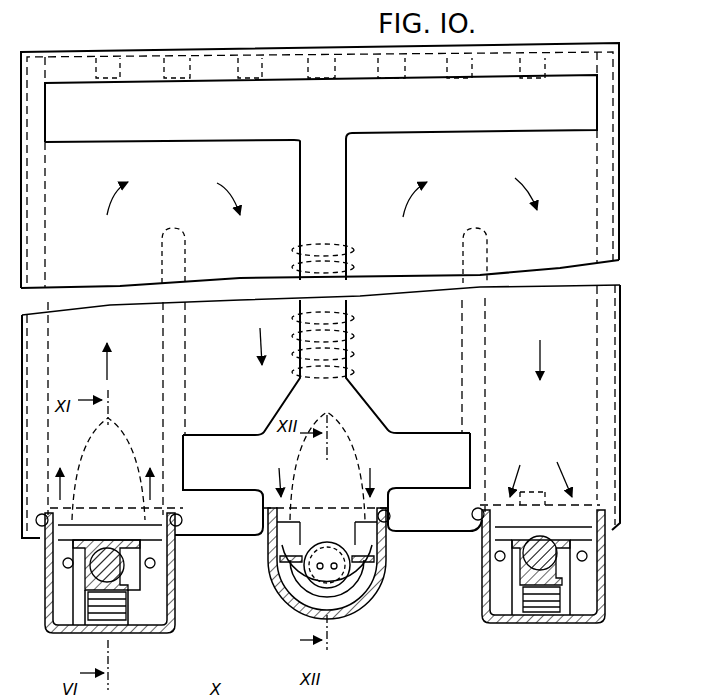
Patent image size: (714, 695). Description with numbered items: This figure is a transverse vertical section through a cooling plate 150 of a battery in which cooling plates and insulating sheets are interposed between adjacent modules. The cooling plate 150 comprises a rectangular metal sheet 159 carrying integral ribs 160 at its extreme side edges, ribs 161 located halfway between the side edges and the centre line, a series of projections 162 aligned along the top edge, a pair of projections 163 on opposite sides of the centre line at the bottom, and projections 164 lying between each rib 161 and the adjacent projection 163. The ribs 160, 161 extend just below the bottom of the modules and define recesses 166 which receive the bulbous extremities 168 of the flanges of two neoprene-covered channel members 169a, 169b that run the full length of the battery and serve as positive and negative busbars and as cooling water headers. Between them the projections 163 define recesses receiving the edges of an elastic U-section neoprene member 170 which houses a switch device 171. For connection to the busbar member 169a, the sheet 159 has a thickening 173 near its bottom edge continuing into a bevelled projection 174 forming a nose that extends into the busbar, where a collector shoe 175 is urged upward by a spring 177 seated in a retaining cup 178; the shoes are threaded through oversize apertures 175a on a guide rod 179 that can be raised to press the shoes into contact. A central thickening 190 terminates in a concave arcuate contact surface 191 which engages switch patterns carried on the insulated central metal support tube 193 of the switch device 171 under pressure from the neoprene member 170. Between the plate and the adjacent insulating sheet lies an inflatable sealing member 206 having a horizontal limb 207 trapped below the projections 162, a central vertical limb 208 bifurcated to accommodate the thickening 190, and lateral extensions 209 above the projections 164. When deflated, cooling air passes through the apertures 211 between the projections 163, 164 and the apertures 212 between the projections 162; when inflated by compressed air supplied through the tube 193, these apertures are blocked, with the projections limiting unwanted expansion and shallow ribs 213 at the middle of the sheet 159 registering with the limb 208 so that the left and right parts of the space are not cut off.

The cooling plate 150 is at (37, 97).
The rectangular metal sheet 159 is at (155, 152).
The ribs 160 is at (42, 367).
The ribs 161 is at (178, 366).
The projections 162 is at (110, 64).
The projections 163 is at (355, 513).
The projections 164 is at (219, 510).
The recesses 166 is at (60, 513).
The bulbous extremities 168 is at (50, 524).
The positive busbar member 169a is at (170, 630).
The negative busbar member 169b is at (490, 622).
The elastic neoprene member 170 is at (333, 618).
The switch device 171 is at (340, 593).
The thickening 173 is at (112, 426).
The bevelled projection 174 is at (133, 530).
The collector shoe 175 is at (120, 570).
The longitudinal aperture 175a is at (140, 597).
The spring 177 is at (100, 620).
The retaining cup 178 is at (148, 613).
The guide rod 179 is at (84, 580).
The thickening 190 is at (338, 435).
The concave arcuate contact surface 191 is at (388, 538).
The central metal support tube 193 is at (310, 588).
The inflatable sealing member 206 is at (340, 188).
The horizontal limb 207 is at (280, 92).
The central vertical limb 208 is at (346, 238).
The lateral extensions 209 is at (226, 447).
The apertures 211 is at (192, 505).
The apertures 212 is at (277, 58).
The shallow ribs 213 is at (352, 320).